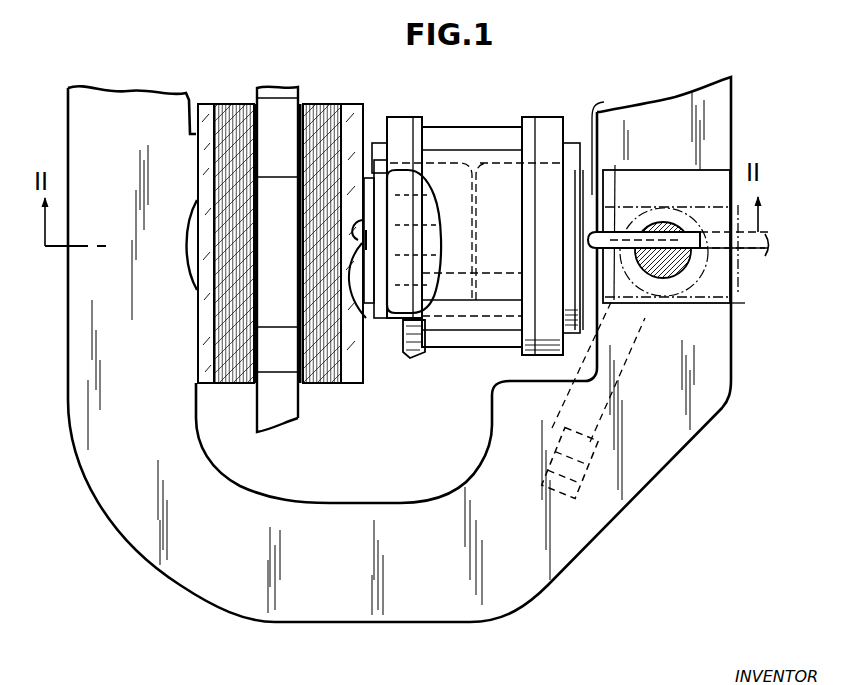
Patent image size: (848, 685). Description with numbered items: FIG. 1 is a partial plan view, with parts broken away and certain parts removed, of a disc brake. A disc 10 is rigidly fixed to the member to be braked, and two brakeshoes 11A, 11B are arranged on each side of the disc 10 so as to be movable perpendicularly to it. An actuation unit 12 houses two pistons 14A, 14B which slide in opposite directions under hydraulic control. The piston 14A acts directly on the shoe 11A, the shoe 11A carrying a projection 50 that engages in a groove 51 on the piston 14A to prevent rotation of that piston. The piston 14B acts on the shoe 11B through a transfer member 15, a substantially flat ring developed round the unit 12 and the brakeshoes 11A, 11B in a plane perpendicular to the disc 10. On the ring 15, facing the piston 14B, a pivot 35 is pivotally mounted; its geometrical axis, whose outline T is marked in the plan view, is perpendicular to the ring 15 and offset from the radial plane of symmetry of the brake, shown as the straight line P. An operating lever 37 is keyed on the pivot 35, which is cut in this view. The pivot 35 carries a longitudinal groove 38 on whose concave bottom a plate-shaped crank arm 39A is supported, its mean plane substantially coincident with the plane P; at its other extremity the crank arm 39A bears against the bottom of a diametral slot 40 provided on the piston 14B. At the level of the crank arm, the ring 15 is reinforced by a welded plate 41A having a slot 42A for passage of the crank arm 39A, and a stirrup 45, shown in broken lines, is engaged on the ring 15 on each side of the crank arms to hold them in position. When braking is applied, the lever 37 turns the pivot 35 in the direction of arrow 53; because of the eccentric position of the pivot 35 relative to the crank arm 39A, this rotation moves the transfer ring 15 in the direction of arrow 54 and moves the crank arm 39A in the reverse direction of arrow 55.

The disc 10 is at (273, 85).
The brakeshoe 11A is at (322, 98).
The brakeshoe 11B is at (213, 97).
The actuation unit 12 is at (556, 116).
The piston 14A is at (428, 322).
The piston 14B is at (619, 137).
The transfer member 15 is at (57, 112).
The pivot 35 is at (666, 282).
The operating lever 37 is at (593, 357).
The longitudinal groove 38 is at (688, 241).
The crank arm 39A is at (636, 219).
The diametral slot 40 is at (590, 240).
The reinforcing plate 41A is at (716, 185).
The slot 42A is at (616, 276).
The stirrup 45 is at (749, 316).
The projection 50 is at (372, 294).
The groove 51 is at (363, 235).
The arrow 53 is at (645, 438).
The arrow 54 is at (758, 428).
The arrow 55 is at (642, 190).
The pivot axis outline T is at (668, 250).
The radial plane of symmetry P is at (756, 268).